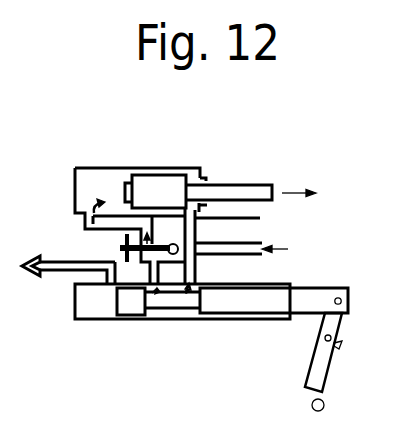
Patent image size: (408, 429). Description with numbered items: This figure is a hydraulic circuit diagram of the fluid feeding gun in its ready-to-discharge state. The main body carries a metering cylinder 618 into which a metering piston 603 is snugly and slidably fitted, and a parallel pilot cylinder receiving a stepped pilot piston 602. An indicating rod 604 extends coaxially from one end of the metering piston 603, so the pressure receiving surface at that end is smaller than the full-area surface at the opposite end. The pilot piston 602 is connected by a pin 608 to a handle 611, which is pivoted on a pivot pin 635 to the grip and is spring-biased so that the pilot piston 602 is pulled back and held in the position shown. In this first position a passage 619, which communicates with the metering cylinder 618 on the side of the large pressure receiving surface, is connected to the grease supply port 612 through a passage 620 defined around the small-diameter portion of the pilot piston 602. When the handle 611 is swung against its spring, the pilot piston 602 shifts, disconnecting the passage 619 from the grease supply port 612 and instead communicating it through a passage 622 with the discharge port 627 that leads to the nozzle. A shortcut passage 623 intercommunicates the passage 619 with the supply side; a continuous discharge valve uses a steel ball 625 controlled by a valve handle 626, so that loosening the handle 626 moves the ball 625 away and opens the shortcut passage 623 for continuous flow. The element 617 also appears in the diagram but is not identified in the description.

The pilot piston 602 is at (227, 306).
The metering piston 603 is at (173, 184).
The indicating rod 604 is at (250, 191).
The pin 608 is at (338, 297).
The handle 611 is at (315, 377).
The grease supply port 612 is at (264, 247).
The stop 617 is at (206, 207).
The metering cylinder 618 is at (103, 183).
The passage 619 is at (85, 226).
The passage 620 is at (163, 316).
The passage 622 is at (63, 269).
The shortcut passage 623 is at (199, 179).
The steel ball 625 is at (182, 196).
The valve handle 626 is at (120, 257).
The discharge port 627 is at (33, 278).
The pivot pin 635 is at (330, 341).